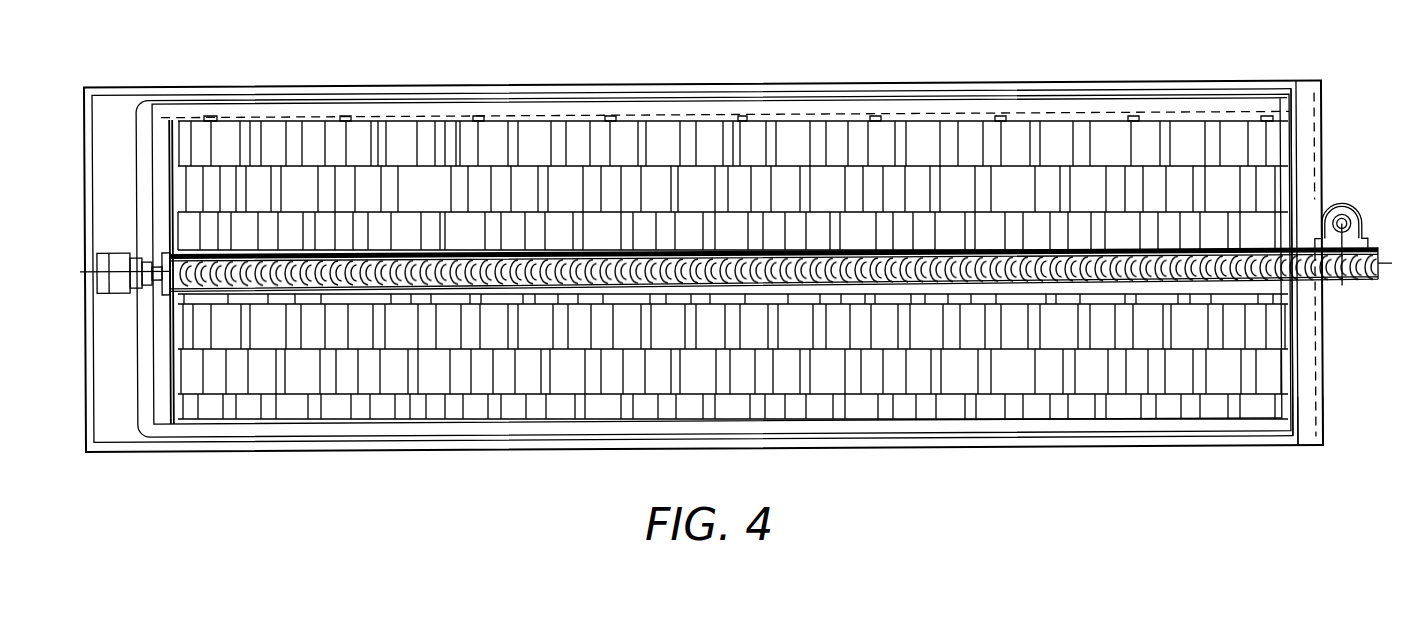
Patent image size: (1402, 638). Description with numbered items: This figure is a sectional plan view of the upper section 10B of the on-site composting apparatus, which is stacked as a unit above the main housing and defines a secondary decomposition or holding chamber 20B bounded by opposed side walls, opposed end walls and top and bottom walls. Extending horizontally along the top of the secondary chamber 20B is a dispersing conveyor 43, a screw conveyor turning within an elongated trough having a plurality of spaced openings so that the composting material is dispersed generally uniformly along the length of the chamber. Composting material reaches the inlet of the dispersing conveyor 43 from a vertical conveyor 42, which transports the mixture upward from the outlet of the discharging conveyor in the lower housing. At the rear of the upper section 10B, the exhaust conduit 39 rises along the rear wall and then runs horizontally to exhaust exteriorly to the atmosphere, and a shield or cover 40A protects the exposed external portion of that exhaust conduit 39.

The upper section 10B is at (1012, 86).
The secondary decomposition chamber 20B is at (1102, 141).
The exhaust conduit 39 is at (1307, 177).
The shield or cover 40A is at (1308, 427).
The vertical conveyor 42 is at (1343, 207).
The dispersing conveyor 43 is at (425, 266).